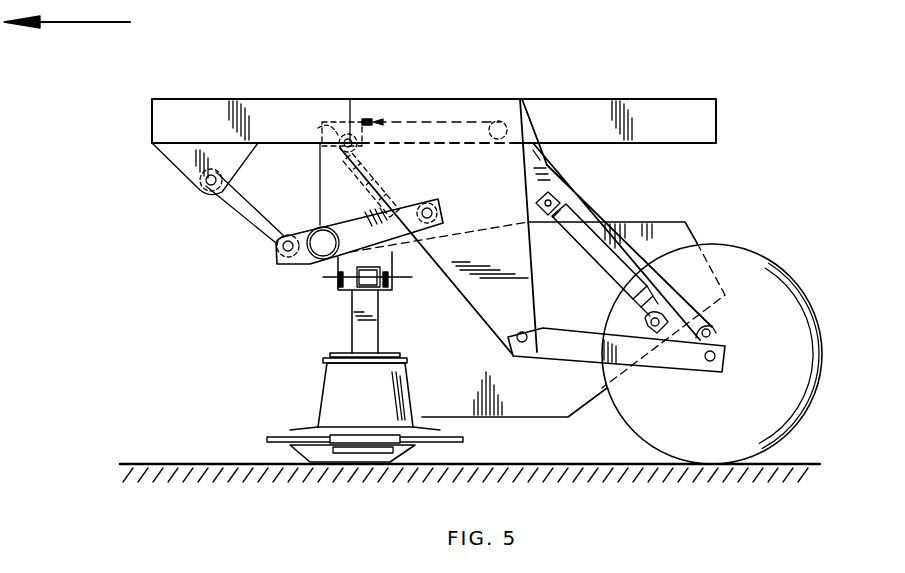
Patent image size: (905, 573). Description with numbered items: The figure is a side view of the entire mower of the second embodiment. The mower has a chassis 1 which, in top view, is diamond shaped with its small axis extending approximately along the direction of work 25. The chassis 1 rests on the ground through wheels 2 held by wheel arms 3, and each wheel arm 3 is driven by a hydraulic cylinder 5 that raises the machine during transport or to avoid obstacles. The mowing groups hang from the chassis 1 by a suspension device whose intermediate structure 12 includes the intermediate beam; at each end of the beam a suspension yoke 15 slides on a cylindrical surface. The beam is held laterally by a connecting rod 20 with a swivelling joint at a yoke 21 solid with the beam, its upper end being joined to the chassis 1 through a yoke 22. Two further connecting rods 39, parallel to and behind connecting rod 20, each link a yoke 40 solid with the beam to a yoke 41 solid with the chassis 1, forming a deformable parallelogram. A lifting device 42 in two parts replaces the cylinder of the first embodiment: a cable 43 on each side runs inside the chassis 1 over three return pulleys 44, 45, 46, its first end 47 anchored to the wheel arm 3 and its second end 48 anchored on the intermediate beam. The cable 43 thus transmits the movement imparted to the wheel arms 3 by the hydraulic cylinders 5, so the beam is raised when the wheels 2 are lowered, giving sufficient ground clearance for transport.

The chassis 1 is at (558, 99).
The wheel 2 is at (806, 360).
The wheel arm 3 is at (635, 348).
The hydraulic cylinder 5 is at (600, 288).
The intermediate structure 12 is at (306, 267).
The suspension yoke 15 is at (343, 288).
The connecting rod 20 is at (240, 214).
The yoke 21 is at (273, 262).
The yoke 22 is at (185, 162).
The direction of work 25 is at (100, 24).
The connecting rod 39 is at (395, 174).
The yoke 40 is at (402, 230).
The yoke 41 is at (333, 152).
The lifting device 42 is at (418, 120).
The cable 43 is at (588, 210).
The return pulley 44 is at (325, 130).
The return pulley 45 is at (373, 121).
The return pulley 46 is at (498, 120).
The first end 47 is at (712, 328).
The second end 48 is at (320, 228).